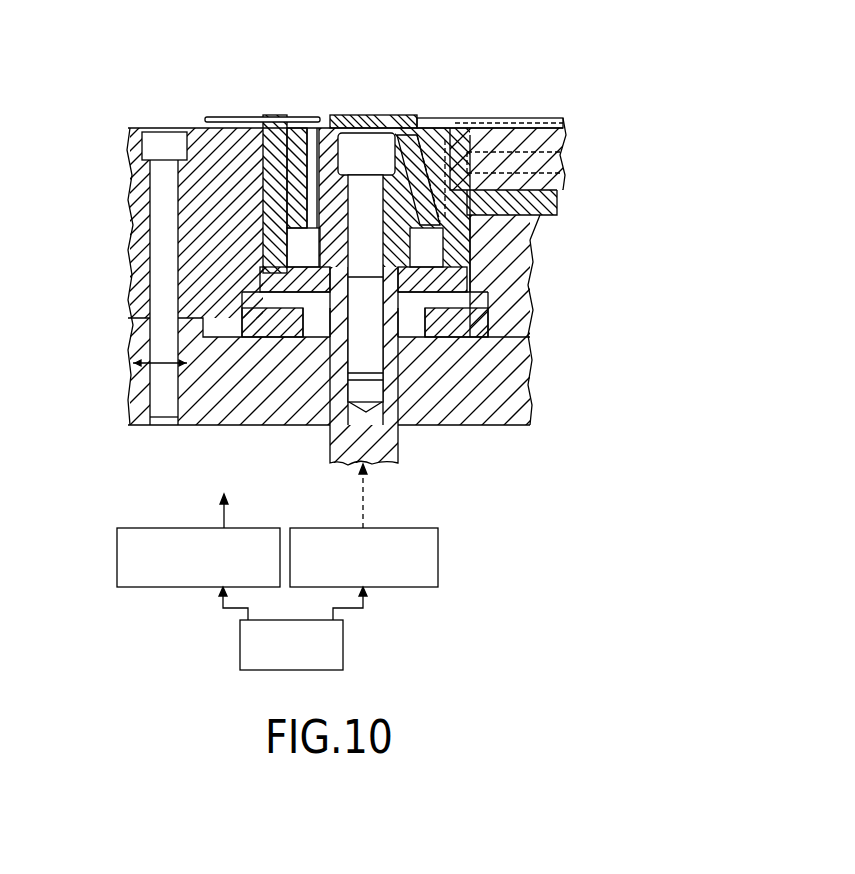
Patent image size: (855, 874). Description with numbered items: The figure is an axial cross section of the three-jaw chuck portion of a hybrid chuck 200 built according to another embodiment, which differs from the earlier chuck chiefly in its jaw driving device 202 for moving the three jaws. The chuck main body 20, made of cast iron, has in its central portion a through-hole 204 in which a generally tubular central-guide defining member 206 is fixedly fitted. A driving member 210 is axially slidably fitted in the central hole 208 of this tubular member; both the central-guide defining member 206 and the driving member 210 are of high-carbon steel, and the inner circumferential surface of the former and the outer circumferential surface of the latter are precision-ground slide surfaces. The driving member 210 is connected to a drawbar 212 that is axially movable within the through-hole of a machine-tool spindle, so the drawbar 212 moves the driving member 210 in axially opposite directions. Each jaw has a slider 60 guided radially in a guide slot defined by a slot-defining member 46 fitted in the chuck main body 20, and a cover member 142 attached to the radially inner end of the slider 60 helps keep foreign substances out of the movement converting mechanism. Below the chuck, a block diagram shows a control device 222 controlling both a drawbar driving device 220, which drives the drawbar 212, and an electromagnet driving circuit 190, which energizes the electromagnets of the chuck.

The hybrid chuck 200 is at (529, 80).
The chuck main body 20 is at (142, 188).
The slider (master jaw) 60 is at (540, 118).
The slot-defining member 46 is at (547, 200).
The cover member 142 is at (440, 136).
The jaw driving device 202 is at (410, 437).
The drawbar 212 is at (342, 433).
The through-hole 204 is at (267, 202).
The central-guide defining member 206 is at (270, 122).
The central hole 208 is at (293, 127).
The driving member 210 is at (322, 116).
The electromagnet driving circuit 190 is at (117, 558).
The drawbar driving device 220 is at (438, 550).
The control device 222 is at (307, 670).